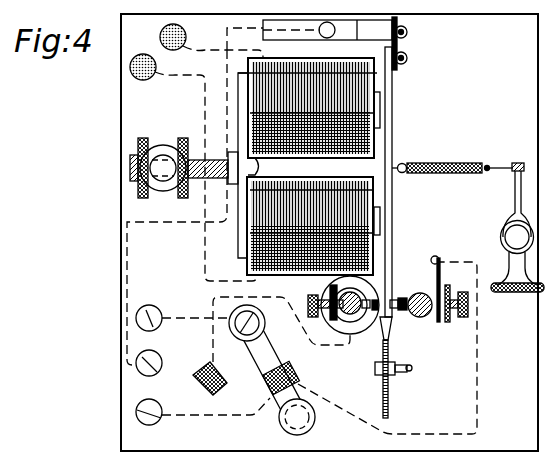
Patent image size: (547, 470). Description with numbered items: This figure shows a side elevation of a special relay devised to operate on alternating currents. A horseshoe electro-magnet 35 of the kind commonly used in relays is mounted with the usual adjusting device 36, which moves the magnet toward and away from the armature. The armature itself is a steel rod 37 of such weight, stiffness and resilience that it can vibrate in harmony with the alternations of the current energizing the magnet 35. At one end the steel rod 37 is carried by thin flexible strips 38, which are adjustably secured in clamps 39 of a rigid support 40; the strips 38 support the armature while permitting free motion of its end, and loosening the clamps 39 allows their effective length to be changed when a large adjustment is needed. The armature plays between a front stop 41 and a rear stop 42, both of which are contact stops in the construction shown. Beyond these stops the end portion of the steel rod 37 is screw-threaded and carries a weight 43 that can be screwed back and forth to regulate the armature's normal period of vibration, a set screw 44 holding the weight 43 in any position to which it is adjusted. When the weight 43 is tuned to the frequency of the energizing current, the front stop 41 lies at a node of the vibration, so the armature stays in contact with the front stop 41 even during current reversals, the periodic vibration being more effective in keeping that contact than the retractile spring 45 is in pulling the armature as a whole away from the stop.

The horseshoe electro-magnet 35 is at (350, 101).
The adjusting device 36 is at (197, 157).
The steel rod 37 is at (392, 142).
The thin flexible strips 38 is at (406, 30).
The clamps 39 is at (404, 45).
The rigid support 40 is at (331, 33).
The front stop 41 is at (368, 330).
The rear stop 42 is at (398, 313).
The weight 43 is at (391, 375).
The set screw 44 is at (406, 368).
The retractile spring 45 is at (448, 160).